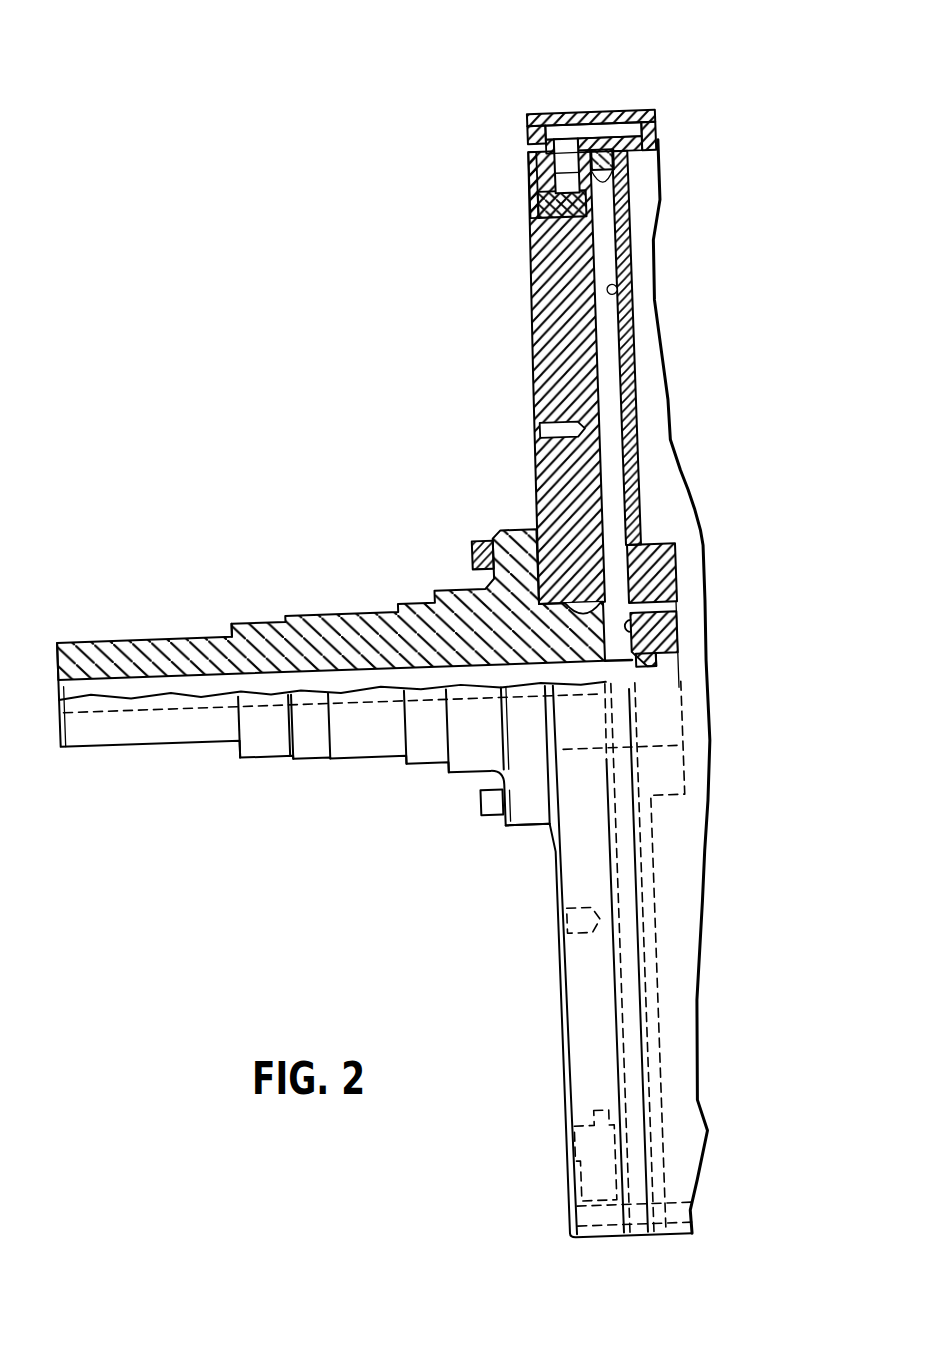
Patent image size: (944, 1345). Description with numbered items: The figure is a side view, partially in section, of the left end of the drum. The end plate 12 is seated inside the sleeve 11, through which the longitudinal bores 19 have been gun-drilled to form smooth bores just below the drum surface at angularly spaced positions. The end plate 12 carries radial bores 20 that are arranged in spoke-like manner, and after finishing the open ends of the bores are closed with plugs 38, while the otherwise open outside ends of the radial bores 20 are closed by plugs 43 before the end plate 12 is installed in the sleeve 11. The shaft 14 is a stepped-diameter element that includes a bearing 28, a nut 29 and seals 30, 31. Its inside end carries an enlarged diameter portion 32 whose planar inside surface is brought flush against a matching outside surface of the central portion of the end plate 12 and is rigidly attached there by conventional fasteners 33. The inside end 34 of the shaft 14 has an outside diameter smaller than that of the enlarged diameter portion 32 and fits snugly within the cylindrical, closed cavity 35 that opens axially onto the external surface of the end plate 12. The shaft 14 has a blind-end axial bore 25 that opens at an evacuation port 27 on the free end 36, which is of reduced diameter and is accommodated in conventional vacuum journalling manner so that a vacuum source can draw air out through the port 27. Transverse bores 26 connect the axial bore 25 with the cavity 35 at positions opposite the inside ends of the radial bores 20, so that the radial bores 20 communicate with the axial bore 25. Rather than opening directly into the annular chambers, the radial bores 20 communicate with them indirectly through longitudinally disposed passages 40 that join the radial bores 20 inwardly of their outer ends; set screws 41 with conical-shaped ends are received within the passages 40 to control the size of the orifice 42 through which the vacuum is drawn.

The sleeve 11 is at (598, 110).
The end plate 12 is at (510, 315).
The shaft 14 is at (165, 620).
The longitudinal bores 19 is at (656, 125).
The radial bores 20 is at (615, 290).
The axial bore 25 is at (205, 640).
The transverse bores 26 is at (635, 625).
The evacuation port 27 is at (33, 690).
The bearing 28 is at (365, 752).
The nut 29 is at (310, 756).
The seal 30 is at (412, 762).
The seal 31 is at (258, 752).
The enlarged diameter portion 32 is at (520, 826).
The fasteners 33 is at (475, 548).
The inside end 34 is at (650, 662).
The cavity 35 is at (680, 560).
The free end 36 is at (128, 735).
The plugs 38 is at (528, 130).
The longitudinally disposed passages 40 is at (536, 200).
The set screws 41 is at (537, 210).
The orifice 42 is at (578, 190).
The plugs 43 is at (590, 208).